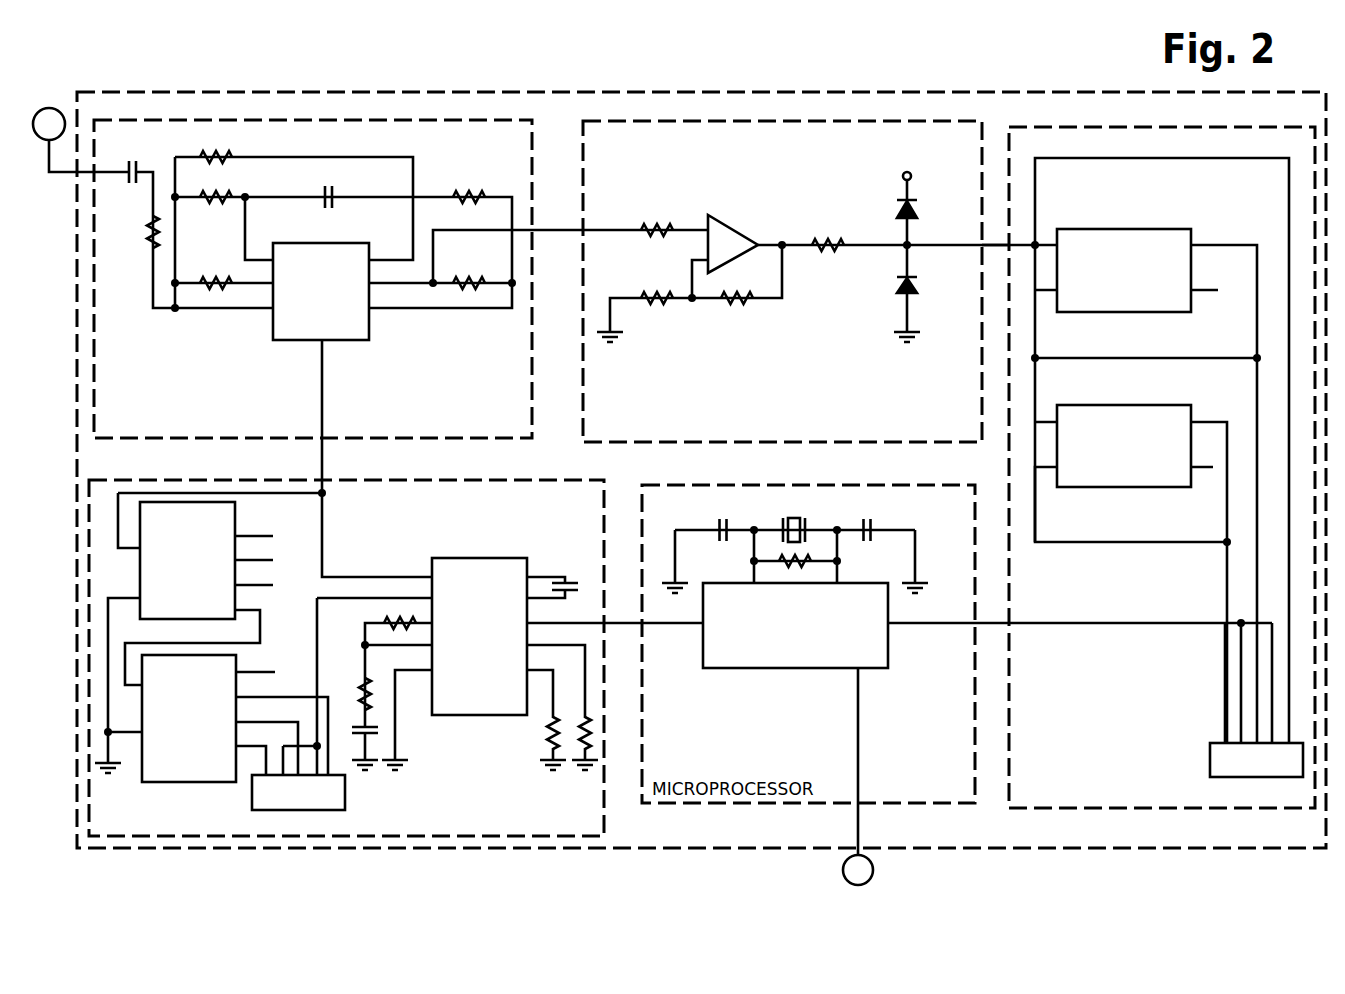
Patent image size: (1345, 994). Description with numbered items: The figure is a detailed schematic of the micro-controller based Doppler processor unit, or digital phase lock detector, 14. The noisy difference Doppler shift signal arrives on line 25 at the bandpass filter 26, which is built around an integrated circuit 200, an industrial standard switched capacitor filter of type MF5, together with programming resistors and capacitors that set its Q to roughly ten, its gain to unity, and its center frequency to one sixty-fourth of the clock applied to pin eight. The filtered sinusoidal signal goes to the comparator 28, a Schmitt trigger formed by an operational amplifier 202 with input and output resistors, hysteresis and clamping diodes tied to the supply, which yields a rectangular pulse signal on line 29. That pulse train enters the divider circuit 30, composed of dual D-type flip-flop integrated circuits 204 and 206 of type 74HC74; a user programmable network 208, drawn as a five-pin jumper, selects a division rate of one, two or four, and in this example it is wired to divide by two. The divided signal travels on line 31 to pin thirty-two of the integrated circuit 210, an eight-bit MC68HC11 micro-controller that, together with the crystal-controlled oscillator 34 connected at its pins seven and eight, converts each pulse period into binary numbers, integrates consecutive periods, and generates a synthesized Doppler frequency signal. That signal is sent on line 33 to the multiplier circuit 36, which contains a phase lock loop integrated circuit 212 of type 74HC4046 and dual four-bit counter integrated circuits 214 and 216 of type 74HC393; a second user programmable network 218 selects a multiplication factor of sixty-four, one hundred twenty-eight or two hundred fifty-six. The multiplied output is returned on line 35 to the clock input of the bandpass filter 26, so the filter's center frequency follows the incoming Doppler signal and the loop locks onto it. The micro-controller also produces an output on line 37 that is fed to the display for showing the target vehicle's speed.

The micro-controller based Doppler processor unit 14 is at (701, 452).
The line 25 is at (81, 167).
The bandpass filter 26 is at (313, 250).
The comparator 28 is at (782, 253).
The line 29 is at (974, 269).
The divider circuit 30 is at (1162, 438).
The line 31 is at (1080, 642).
The line 33 is at (615, 587).
The crystal-controlled oscillator 34 is at (795, 542).
The line 35 is at (375, 513).
The multiplier circuit 36 is at (380, 660).
The line 37 is at (887, 776).
The integrated circuit 200 is at (404, 312).
The operational amplifier 202 is at (827, 245).
The integrated circuit 204 is at (1160, 450).
The integrated circuit 206 is at (1133, 557).
The user programmable network 208 is at (1224, 713).
The integrated circuit 210 is at (795, 651).
The phase lock loop integrated circuit 212 is at (475, 638).
The dual 4-bit counter integrated circuit 214 is at (208, 633).
The dual 4-bit counter integrated circuit 216 is at (270, 690).
The user programmable network 218 is at (337, 806).